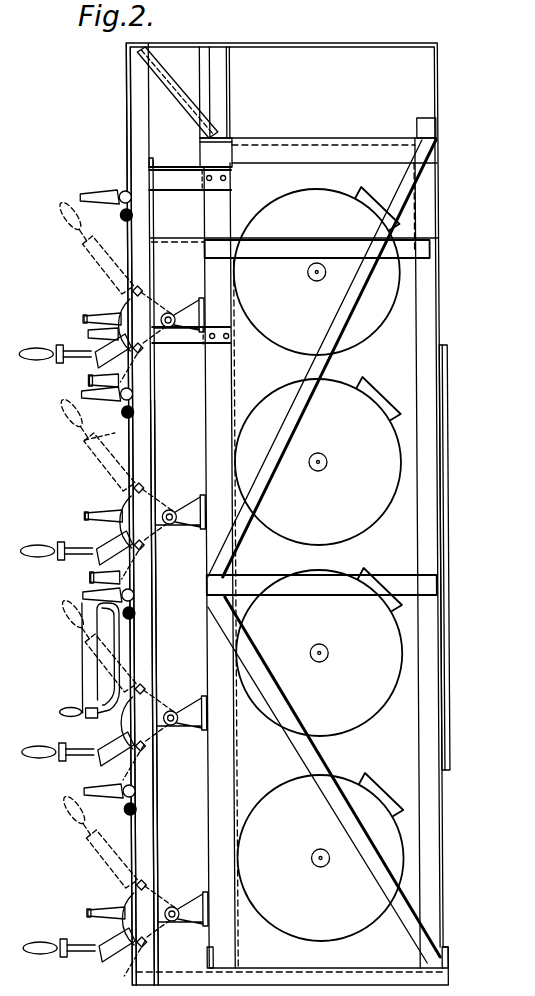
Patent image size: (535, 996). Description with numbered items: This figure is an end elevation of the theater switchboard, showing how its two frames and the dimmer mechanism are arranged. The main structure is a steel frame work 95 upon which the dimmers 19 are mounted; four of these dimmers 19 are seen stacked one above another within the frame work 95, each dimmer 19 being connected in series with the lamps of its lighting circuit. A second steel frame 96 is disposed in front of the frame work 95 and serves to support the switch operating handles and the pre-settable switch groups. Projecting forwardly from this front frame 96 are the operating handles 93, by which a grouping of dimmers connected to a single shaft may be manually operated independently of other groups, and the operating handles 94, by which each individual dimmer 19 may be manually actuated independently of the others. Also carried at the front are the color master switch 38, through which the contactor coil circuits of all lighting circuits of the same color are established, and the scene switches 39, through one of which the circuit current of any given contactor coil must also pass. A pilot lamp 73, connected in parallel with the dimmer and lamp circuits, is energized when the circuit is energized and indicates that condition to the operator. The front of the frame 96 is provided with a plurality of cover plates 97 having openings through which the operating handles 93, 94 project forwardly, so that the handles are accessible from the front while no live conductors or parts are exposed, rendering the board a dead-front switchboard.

The dimmer 19 is at (366, 328).
The color master switch 38 is at (95, 195).
The scene switch 39 is at (86, 335).
The pilot lamp 73 is at (119, 215).
The operating handle 93 is at (35, 348).
The operating handle 94 is at (88, 314).
The steel frame work 95 is at (235, 777).
The steel frame 96 is at (148, 848).
The cover plate 97 is at (126, 100).